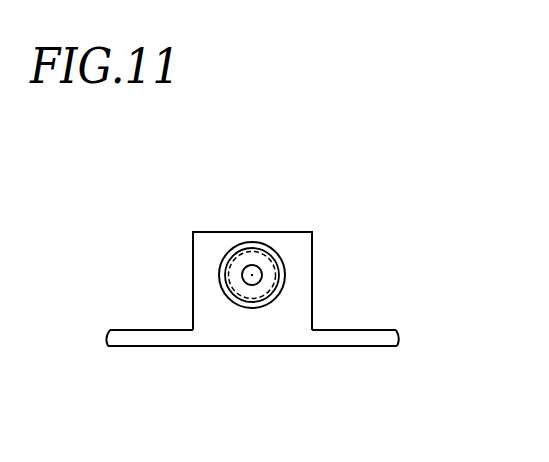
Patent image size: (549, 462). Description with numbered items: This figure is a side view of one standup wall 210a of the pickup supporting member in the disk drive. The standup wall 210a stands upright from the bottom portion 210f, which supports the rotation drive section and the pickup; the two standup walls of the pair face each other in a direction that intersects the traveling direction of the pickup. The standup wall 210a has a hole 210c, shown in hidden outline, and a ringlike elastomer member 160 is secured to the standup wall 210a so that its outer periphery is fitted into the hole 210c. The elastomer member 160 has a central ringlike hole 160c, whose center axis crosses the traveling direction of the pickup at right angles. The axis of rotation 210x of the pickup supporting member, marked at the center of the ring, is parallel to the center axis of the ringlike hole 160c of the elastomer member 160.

The ringlike elastomer member 160 is at (267, 244).
The ringlike hole of elastomer member 160c is at (252, 285).
The standup wall 210a is at (313, 238).
The hole 210c is at (225, 257).
The bottom portion 210f is at (143, 341).
The axis of rotation 210x is at (252, 275).